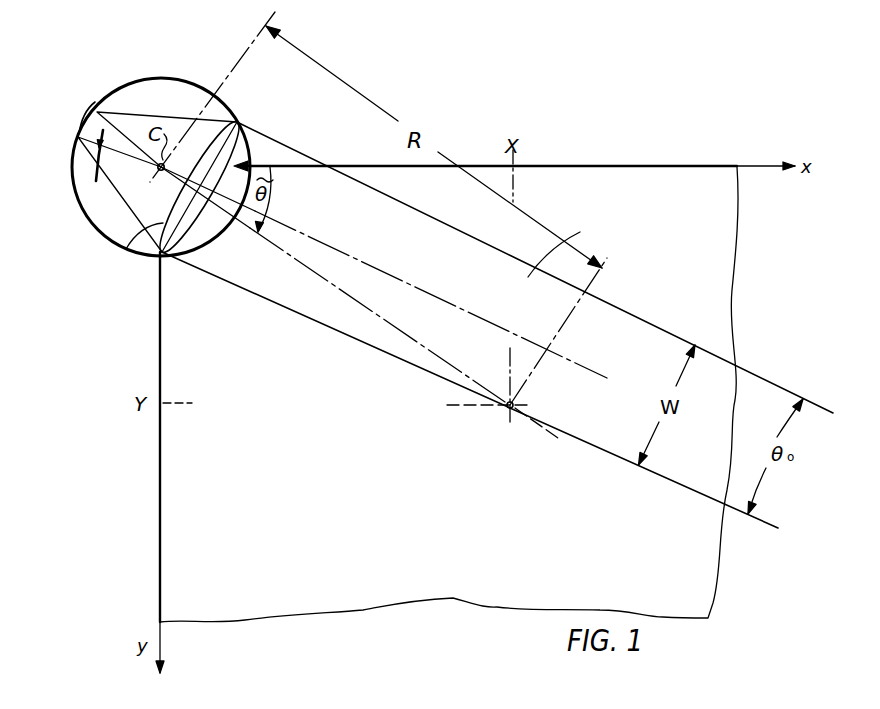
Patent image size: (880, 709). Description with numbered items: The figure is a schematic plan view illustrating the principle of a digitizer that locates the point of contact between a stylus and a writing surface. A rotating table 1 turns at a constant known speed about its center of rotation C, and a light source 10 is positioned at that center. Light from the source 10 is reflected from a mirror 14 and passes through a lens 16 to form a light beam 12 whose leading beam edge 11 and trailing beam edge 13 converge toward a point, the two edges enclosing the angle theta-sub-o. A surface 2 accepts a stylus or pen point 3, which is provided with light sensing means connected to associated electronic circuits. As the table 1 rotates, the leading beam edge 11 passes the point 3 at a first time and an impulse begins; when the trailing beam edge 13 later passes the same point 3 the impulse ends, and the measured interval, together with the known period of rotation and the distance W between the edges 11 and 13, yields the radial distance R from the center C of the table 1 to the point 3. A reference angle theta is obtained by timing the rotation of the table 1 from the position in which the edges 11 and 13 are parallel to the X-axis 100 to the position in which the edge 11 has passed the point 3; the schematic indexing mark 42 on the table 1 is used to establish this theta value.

The rotating table 1 is at (113, 90).
The surface 2 is at (170, 477).
The stylus or pen point 3 is at (506, 408).
The light source 10 is at (157, 170).
The leading beam edge 11 is at (328, 326).
The light beam 12 is at (578, 233).
The trailing beam edge 13 is at (394, 199).
The mirror 14 is at (78, 138).
The lens 16 is at (126, 249).
The indexing mark 42 is at (248, 157).
The X-axis 100 is at (635, 140).